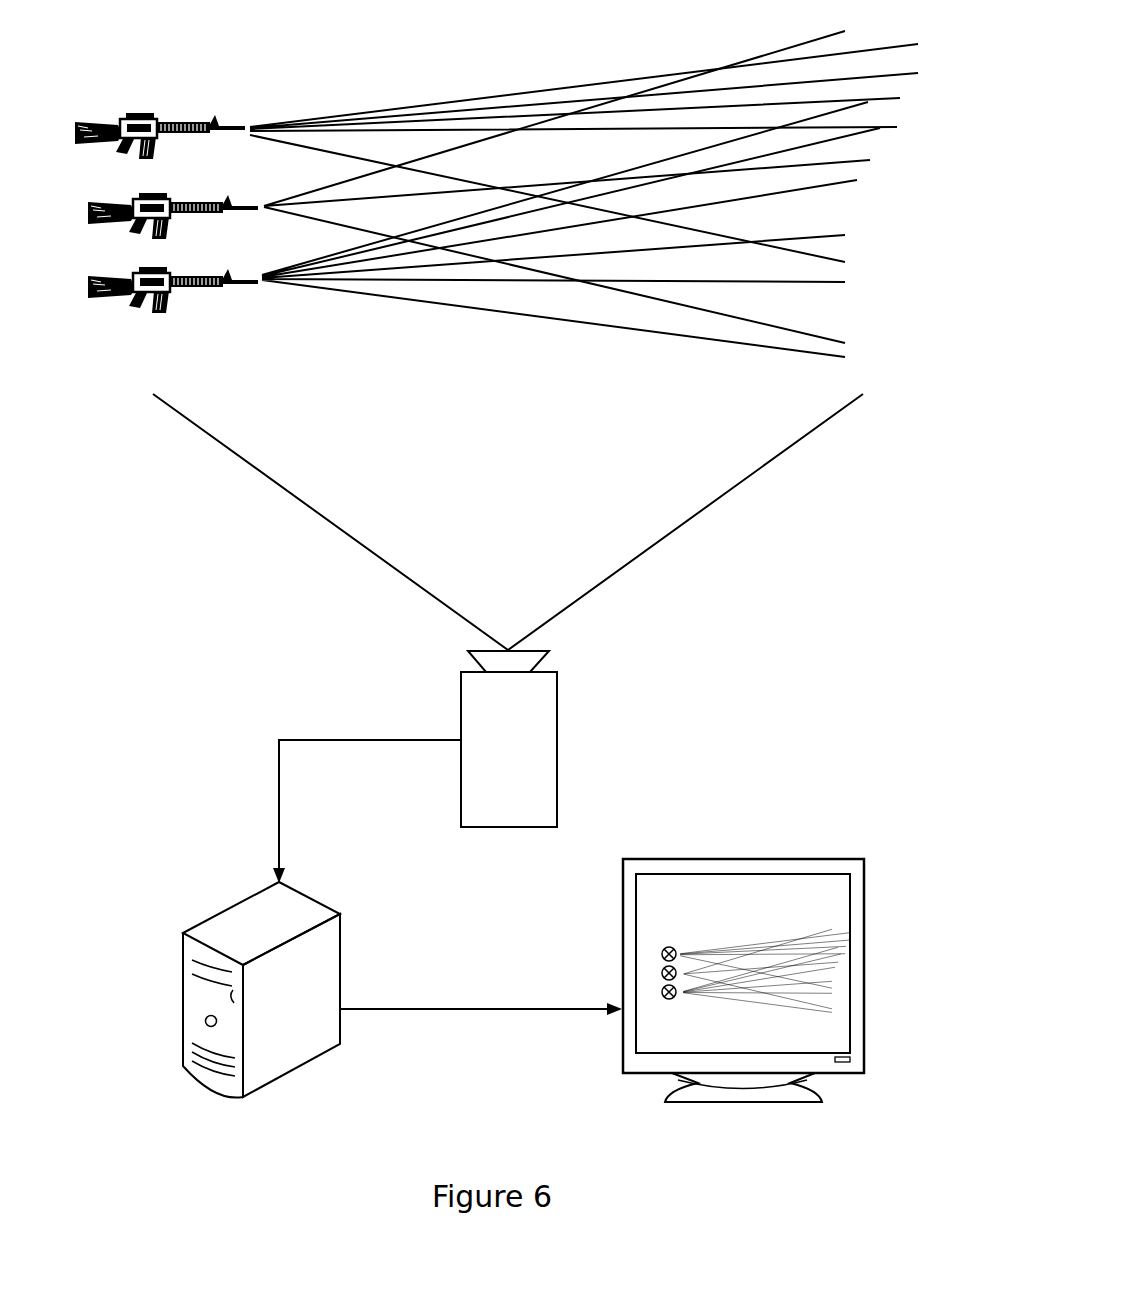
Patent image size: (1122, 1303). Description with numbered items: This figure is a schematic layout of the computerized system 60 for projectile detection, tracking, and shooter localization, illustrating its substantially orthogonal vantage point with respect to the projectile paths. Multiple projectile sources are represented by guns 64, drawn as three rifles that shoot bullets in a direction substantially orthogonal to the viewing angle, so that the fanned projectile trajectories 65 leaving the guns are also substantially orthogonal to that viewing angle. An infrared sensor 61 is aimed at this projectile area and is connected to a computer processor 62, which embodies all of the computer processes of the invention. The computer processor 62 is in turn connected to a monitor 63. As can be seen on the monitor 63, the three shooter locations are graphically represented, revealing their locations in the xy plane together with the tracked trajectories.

The shooting range system 60 is at (262, 716).
The camera 61 is at (558, 725).
The computer 62 is at (183, 1048).
The display monitor 63 is at (800, 849).
The firearms 64 is at (152, 72).
The projectile trajectories 65 is at (477, 72).